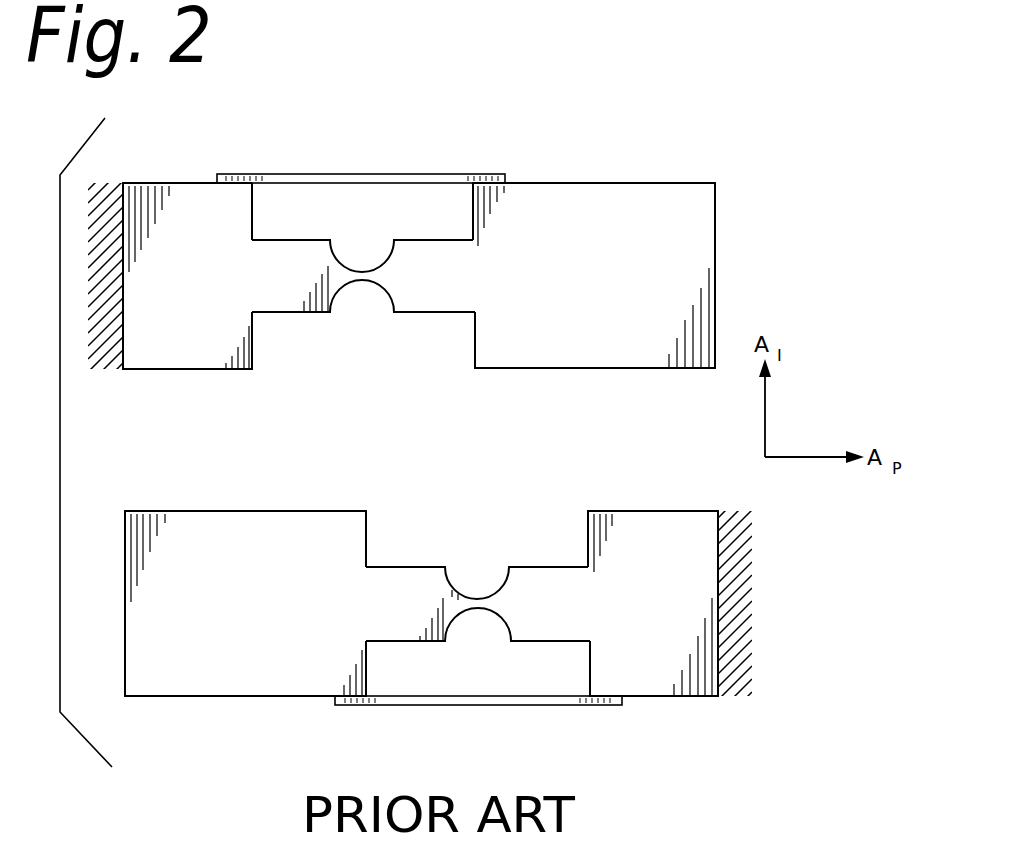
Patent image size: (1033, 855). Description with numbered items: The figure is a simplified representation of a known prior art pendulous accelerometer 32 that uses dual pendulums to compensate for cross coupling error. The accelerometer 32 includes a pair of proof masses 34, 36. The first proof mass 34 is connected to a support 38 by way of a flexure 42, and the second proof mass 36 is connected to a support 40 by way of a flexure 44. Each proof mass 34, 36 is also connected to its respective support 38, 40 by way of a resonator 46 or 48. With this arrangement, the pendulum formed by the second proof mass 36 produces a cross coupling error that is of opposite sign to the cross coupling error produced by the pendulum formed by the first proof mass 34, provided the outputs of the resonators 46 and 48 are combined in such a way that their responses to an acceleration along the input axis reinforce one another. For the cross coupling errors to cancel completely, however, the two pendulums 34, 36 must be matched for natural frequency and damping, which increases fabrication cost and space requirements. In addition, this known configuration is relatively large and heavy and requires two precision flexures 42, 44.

The accelerometer 32 is at (553, 150).
The proof mass 34 is at (703, 222).
The proof mass 36 is at (217, 676).
The support 38 is at (633, 677).
The support 40 is at (175, 350).
The flexure 42 is at (363, 285).
The flexure 44 is at (478, 594).
The resonator 46 is at (308, 176).
The resonator 48 is at (422, 705).